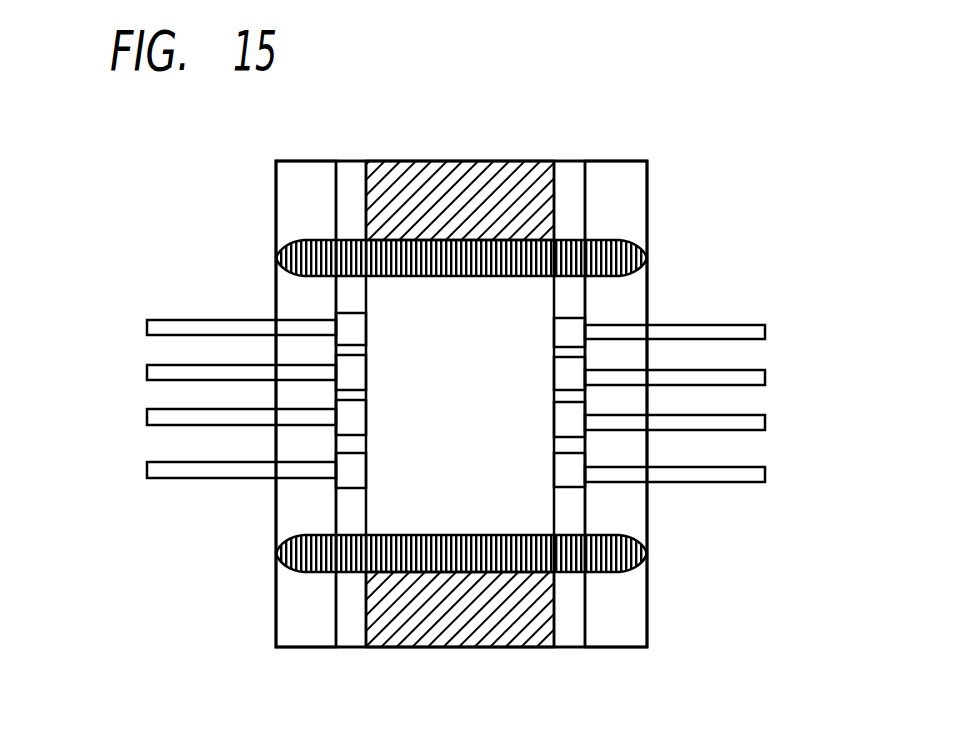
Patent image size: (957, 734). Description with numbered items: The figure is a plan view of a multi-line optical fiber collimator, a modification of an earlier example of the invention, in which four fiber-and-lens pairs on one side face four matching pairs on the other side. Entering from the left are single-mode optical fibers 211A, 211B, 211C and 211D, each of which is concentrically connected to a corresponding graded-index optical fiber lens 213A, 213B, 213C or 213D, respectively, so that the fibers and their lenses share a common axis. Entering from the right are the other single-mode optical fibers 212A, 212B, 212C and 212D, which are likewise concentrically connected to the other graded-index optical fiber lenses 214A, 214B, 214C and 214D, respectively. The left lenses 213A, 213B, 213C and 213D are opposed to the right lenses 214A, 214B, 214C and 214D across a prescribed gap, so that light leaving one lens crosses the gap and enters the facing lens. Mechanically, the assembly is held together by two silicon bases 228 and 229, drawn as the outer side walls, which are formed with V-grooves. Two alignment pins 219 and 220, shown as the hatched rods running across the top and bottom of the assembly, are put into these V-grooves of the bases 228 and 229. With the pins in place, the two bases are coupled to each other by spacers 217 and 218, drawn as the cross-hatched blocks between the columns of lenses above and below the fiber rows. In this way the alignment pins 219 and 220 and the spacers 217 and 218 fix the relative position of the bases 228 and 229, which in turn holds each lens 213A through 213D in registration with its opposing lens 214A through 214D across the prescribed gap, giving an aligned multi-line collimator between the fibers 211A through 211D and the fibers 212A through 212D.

The spacer 217 is at (483, 169).
The spacer 218 is at (487, 632).
The alignment pin 219 is at (648, 255).
The alignment pin 220 is at (648, 551).
The silicon base 228 is at (316, 168).
The silicon base 229 is at (620, 171).
The single-mode optical fiber 211A is at (147, 327).
The single-mode optical fiber 211B is at (147, 372).
The single-mode optical fiber 211C is at (147, 416).
The single-mode optical fiber 211D is at (147, 469).
The single-mode optical fiber 212A is at (765, 331).
The single-mode optical fiber 212B is at (765, 377).
The single-mode optical fiber 212C is at (765, 423).
The single-mode optical fiber 212D is at (765, 474).
The graded-index optical fiber lens 213A is at (361, 327).
The graded-index optical fiber lens 213B is at (361, 375).
The graded-index optical fiber lens 213C is at (361, 420).
The graded-index optical fiber lens 213D is at (361, 470).
The graded-index optical fiber lens 214A is at (560, 329).
The graded-index optical fiber lens 214B is at (560, 377).
The graded-index optical fiber lens 214C is at (560, 422).
The graded-index optical fiber lens 214D is at (560, 472).